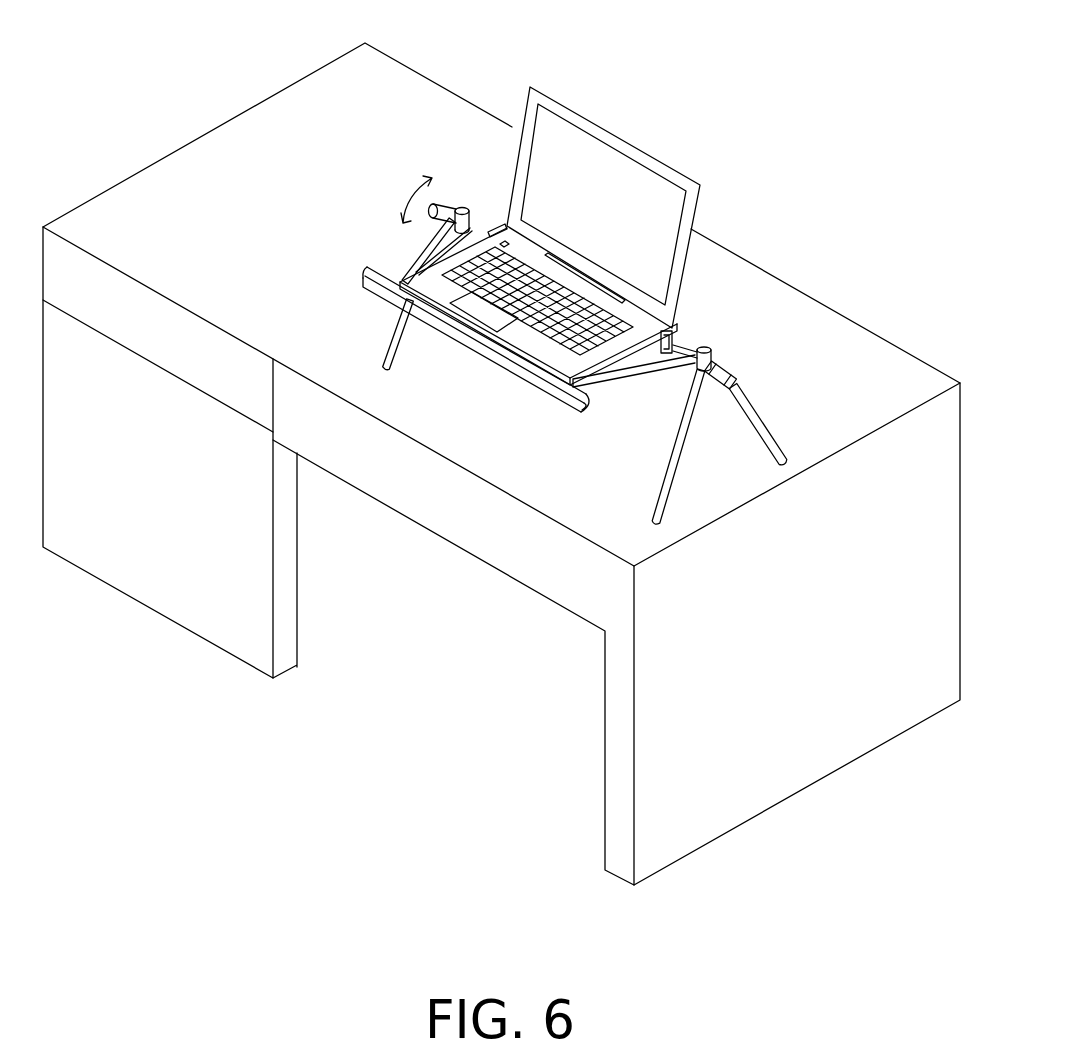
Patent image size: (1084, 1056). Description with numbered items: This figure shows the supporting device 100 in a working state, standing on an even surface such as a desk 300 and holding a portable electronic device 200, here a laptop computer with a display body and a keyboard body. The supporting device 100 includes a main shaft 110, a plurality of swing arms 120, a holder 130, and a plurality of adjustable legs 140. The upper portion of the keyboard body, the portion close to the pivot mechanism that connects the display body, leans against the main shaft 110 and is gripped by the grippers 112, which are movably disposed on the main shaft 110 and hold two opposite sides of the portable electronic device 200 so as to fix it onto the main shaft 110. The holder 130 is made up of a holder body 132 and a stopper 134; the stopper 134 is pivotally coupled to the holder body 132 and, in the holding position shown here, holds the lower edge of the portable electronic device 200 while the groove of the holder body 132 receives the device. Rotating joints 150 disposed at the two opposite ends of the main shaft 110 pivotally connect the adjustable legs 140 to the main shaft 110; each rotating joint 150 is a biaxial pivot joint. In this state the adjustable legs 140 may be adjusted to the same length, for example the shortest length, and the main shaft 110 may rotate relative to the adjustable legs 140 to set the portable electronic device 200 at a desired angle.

The supporting device 100 is at (794, 207).
The main shaft 110 is at (674, 348).
The gripper 112 is at (670, 326).
The swing arm 120 is at (632, 378).
The holder 130 is at (407, 320).
The holder body 132 is at (370, 293).
The stopper 134 is at (368, 267).
The adjustable leg 140 is at (683, 455).
The rotating joint 150 is at (718, 370).
The portable electronic device 200 is at (577, 117).
The desk 300 is at (398, 78).